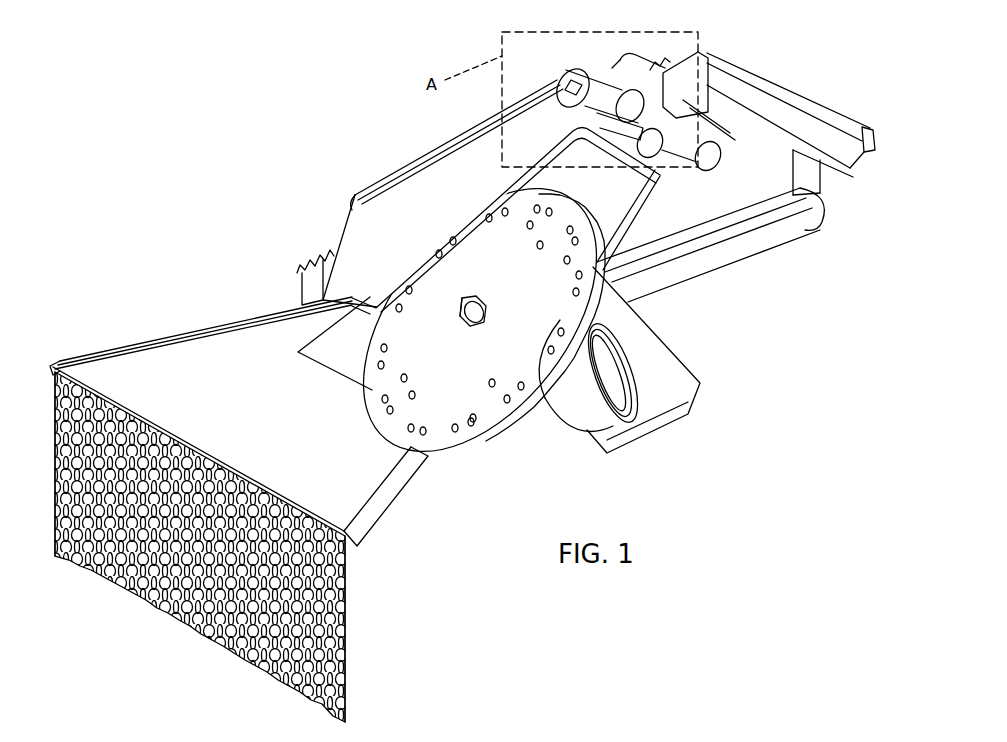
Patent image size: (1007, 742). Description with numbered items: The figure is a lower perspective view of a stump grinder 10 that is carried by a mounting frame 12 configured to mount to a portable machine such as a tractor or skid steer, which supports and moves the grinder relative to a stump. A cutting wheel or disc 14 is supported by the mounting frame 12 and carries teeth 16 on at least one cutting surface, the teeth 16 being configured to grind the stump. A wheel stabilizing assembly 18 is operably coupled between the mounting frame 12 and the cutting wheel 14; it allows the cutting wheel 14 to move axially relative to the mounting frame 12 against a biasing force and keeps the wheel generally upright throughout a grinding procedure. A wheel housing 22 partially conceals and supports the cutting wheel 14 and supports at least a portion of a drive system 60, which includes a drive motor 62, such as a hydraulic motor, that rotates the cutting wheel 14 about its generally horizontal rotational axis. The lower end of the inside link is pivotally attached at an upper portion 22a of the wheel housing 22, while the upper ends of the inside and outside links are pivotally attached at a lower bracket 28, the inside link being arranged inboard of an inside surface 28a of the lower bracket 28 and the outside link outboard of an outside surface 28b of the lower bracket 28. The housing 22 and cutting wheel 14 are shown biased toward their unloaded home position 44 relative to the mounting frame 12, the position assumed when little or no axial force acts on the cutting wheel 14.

The stump grinder 10 is at (158, 88).
The mounting frame 12 is at (790, 88).
The cutting wheel or disc 14 is at (447, 430).
The teeth 16 is at (480, 333).
The wheel stabilizing assembly 18 is at (568, 58).
The wheel housing 22 is at (395, 192).
The upper portion of the wheel housing 22a is at (425, 155).
The lower bracket 28 is at (750, 180).
The inside surface of the lower bracket 28a is at (712, 187).
The outside surface of the lower bracket 28b is at (780, 190).
The home position 44 is at (538, 52).
The drive system 60 is at (555, 432).
The drive motor 62 is at (578, 402).